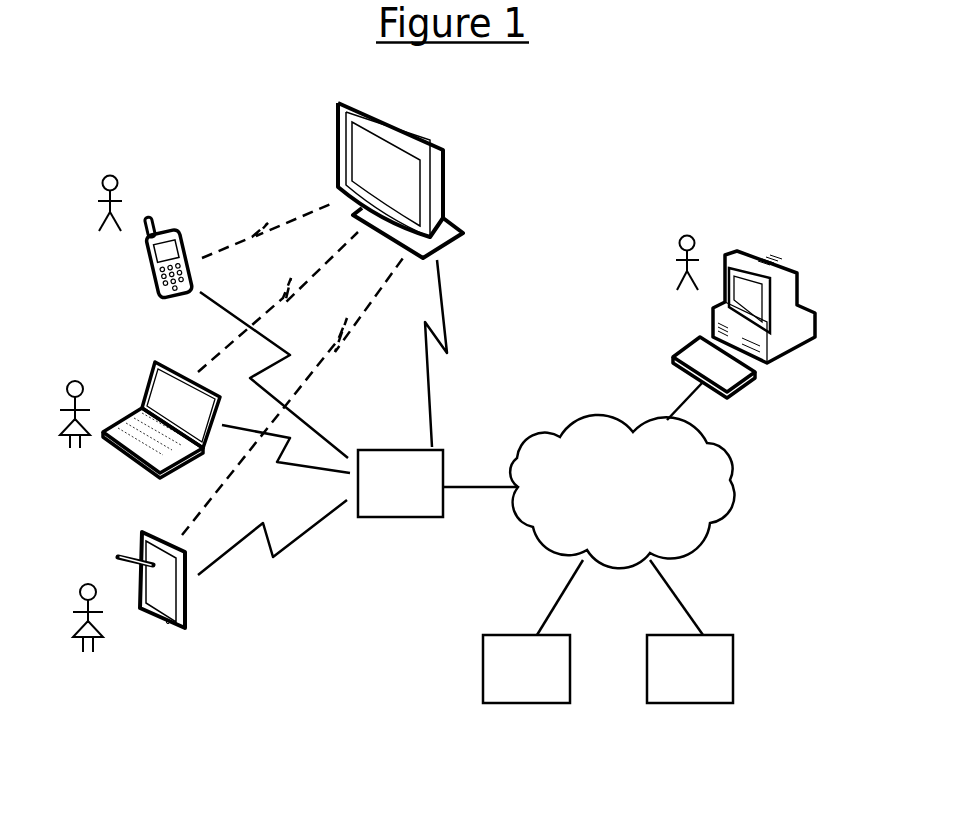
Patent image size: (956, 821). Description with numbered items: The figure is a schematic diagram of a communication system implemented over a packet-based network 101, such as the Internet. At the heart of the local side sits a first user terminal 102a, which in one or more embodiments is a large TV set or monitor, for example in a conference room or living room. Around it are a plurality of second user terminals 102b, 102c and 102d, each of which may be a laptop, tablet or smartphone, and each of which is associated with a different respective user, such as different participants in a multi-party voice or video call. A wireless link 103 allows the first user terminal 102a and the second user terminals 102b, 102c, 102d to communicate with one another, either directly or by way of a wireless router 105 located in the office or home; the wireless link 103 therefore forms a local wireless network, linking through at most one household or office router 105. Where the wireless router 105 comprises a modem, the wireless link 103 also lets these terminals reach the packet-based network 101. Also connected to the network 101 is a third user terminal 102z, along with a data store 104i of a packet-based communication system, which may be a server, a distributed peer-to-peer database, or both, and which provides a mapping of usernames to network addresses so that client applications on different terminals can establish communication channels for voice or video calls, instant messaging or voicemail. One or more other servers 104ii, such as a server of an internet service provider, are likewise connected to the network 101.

The packet-based network 101 is at (733, 478).
The first user terminal 102a is at (445, 187).
The second user terminal 102b is at (150, 267).
The second user terminal 102c is at (132, 467).
The second user terminal 102d is at (170, 625).
The third user terminal 102z is at (765, 255).
The wireless link 103 is at (235, 240).
The data store 104i is at (525, 703).
The other server 104ii is at (690, 703).
The wireless router 105 is at (398, 517).